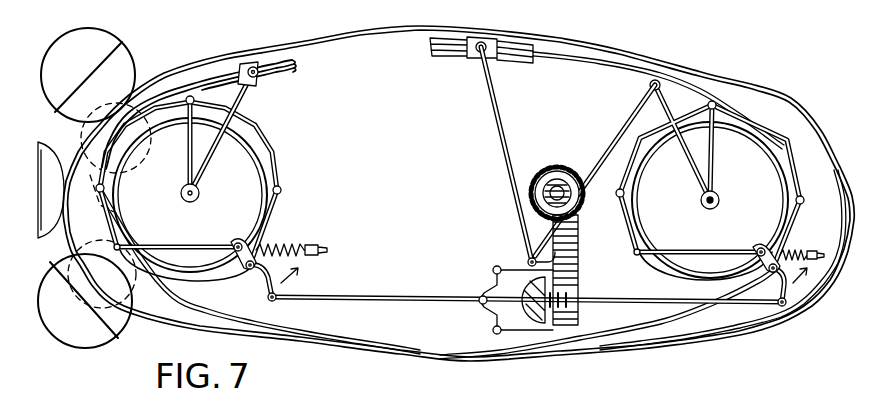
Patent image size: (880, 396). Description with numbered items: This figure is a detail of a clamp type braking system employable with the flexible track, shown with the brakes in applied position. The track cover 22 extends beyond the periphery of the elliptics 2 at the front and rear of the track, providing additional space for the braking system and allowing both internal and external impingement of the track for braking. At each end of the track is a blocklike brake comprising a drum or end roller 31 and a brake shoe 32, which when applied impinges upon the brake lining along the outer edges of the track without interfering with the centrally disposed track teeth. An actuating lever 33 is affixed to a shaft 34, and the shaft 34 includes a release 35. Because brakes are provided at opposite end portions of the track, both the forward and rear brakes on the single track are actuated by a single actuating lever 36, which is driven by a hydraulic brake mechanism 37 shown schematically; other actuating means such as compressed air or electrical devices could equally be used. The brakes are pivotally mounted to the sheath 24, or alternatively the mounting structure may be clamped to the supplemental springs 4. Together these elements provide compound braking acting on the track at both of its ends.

The elliptics 2 is at (337, 14).
The supplemental springs 4 is at (284, 52).
The track cover 22 is at (128, 72).
The sheath 24 is at (253, 67).
The drum or end roller 31 is at (250, 138).
The brake shoe 32 is at (268, 160).
The actuating lever 33 is at (266, 280).
The shaft 34 is at (158, 250).
The release 35 is at (292, 242).
The actuating lever 36 is at (357, 305).
The hydraulic brake mechanism 37 is at (560, 323).